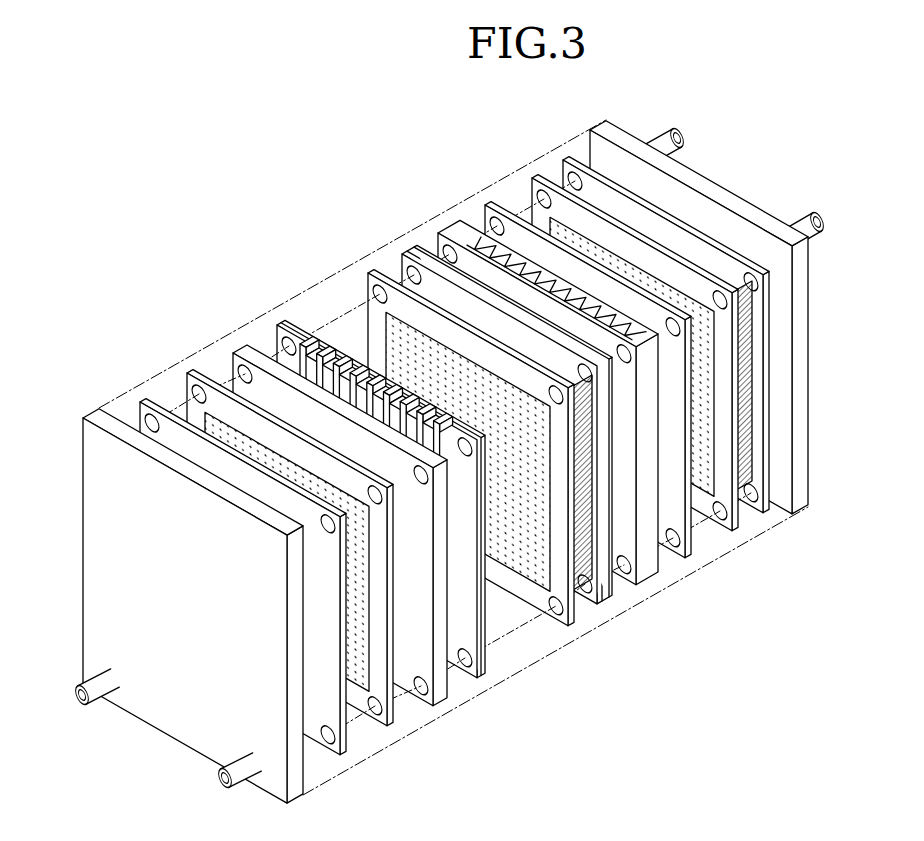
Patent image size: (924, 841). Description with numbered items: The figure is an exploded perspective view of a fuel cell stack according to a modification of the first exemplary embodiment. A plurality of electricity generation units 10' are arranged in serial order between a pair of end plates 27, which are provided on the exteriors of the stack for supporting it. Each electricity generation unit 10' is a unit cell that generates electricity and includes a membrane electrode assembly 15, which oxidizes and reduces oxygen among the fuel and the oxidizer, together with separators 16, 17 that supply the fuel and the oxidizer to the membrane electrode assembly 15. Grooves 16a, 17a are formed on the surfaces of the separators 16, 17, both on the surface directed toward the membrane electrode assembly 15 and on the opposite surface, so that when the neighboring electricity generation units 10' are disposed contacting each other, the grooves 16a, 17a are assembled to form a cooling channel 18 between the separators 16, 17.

The end plate 27 is at (483, 479).
The separator 17 is at (454, 488).
The membrane electrode assembly 15 is at (439, 488).
The separator 16 is at (399, 488).
The cooling channel 18 is at (477, 240).
The groove 17a is at (285, 332).
The groove 16a is at (268, 363).
The electricity generation unit 10' is at (328, 537).